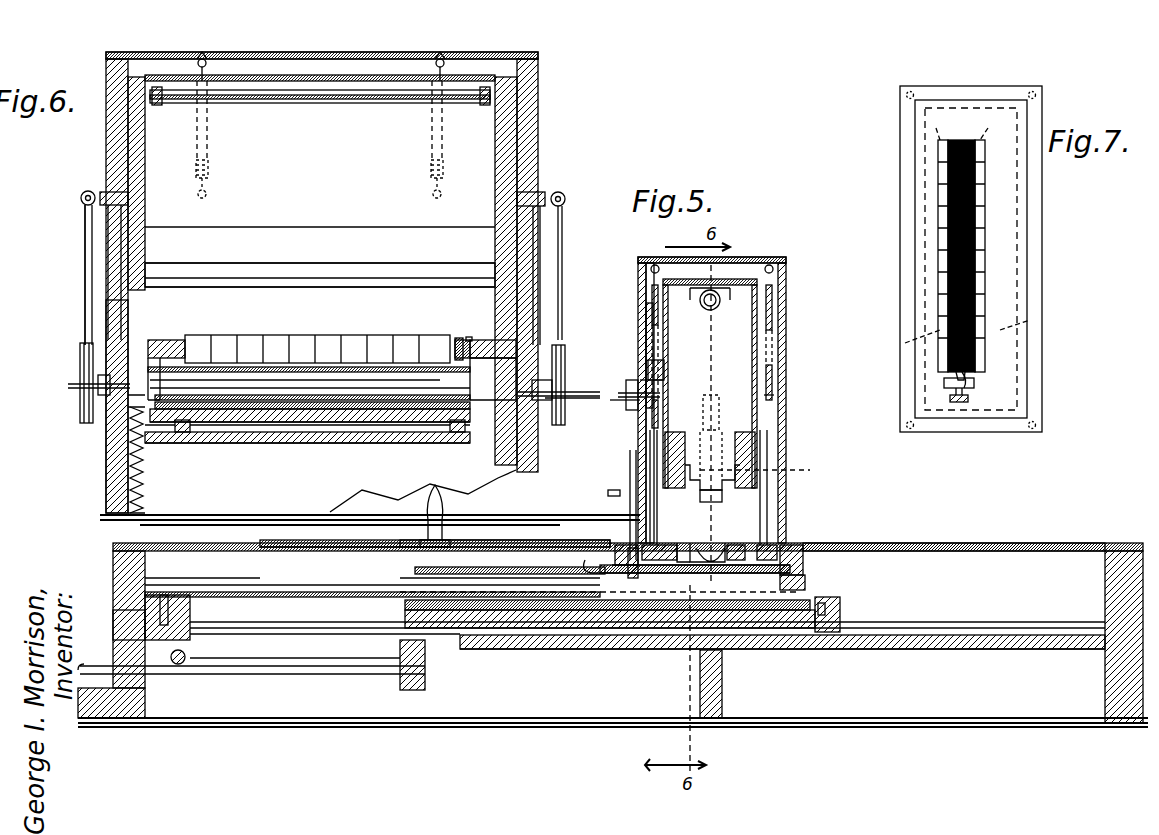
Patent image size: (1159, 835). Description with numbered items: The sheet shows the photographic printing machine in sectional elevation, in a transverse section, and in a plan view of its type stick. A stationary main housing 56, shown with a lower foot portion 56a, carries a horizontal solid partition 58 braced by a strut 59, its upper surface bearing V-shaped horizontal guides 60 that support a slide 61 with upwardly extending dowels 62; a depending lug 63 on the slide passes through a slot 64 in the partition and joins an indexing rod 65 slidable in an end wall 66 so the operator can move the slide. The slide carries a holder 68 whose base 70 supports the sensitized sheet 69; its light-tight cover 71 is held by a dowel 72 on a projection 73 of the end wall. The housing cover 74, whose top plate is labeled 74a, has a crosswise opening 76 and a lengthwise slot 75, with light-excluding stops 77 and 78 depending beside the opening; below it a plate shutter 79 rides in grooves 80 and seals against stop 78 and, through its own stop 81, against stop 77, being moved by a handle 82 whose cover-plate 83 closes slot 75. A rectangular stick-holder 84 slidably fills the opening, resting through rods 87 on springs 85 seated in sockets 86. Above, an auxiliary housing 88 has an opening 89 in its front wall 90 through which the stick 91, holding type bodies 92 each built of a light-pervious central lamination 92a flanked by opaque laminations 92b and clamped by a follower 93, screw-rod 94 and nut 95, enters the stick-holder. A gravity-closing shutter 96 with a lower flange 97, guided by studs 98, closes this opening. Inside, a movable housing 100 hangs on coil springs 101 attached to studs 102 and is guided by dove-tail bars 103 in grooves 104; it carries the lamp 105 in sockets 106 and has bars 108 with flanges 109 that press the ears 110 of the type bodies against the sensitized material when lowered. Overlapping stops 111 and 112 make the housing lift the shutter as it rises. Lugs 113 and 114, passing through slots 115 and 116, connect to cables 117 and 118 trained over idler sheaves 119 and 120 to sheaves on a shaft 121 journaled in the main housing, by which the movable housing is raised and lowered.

In FIG. 5, the main housing 56 is at (1135, 560).
In FIG. 5, the base casing foot 56a is at (88, 718).
In FIG. 6, the horizontal solid partition 58 is at (346, 443).
In FIG. 5, the horizontal solid partition 58 is at (966, 649).
In FIG. 5, the strut 59 is at (700, 682).
In FIG. 6, the horizontal guides 60 is at (180, 432).
In FIG. 5, the horizontal guides 60 is at (292, 628).
In FIG. 6, the slide 61 is at (308, 443).
In FIG. 5, the slide 61 is at (464, 636).
In FIG. 5, the dowels 62 is at (830, 610).
In FIG. 5, the depending lug 63 is at (425, 670).
In FIG. 5, the slot 64 is at (306, 640).
In FIG. 5, the indexing rod 65 is at (90, 666).
In FIG. 5, the end wall 66 is at (113, 590).
In FIG. 5, the holder 68 is at (835, 592).
In FIG. 6, the sheet 69 is at (235, 425).
In FIG. 5, the sheet 69 is at (520, 628).
In FIG. 6, the base 70 is at (388, 443).
In FIG. 5, the base 70 is at (840, 610).
In FIG. 6, the cover 71 is at (214, 395).
In FIG. 5, the cover 71 is at (330, 592).
In FIG. 5, the dowel 72 is at (113, 624).
In FIG. 5, the projection 73 is at (190, 612).
In FIG. 5, the cover 74 is at (248, 551).
In FIG. 5, the top cover plate 74a is at (960, 543).
In FIG. 5, the slot 75 is at (302, 547).
In FIG. 5, the opening 76 is at (620, 555).
In FIG. 5, the light-excluding stop 77 is at (614, 578).
In FIG. 6, the light-excluding stop 78 is at (262, 422).
In FIG. 5, the light-excluding stop 78 is at (790, 582).
In FIG. 6, the shutter 79 is at (380, 367).
In FIG. 5, the shutter 79 is at (512, 567).
In FIG. 5, the grooves 80 is at (198, 585).
In FIG. 5, the stop 81 is at (600, 548).
In FIG. 5, the handle 82 is at (442, 497).
In FIG. 5, the cover-plate 83 is at (298, 540).
In FIG. 6, the stick-holder 84 is at (150, 340).
In FIG. 5, the stick-holder 84 is at (765, 545).
In FIG. 7, the stick-holder 84 is at (900, 158).
In FIG. 6, the springs 85 is at (106, 450).
In FIG. 6, the sockets 86 is at (146, 480).
In FIG. 6, the rods 87 is at (80, 388).
In FIG. 5, the rods 87 is at (803, 545).
In FIG. 7, the rods 87 is at (910, 91).
In FIG. 6, the auxiliary housing 88 is at (553, 129).
In FIG. 5, the auxiliary housing 88 is at (795, 337).
In FIG. 5, the opening 89 is at (630, 503).
In FIG. 6, the front wall 90 is at (266, 52).
In FIG. 5, the front wall 90 is at (662, 257).
In FIG. 6, the stick 91 is at (148, 345).
In FIG. 5, the stick 91 is at (755, 545).
In FIG. 7, the stick 91 is at (925, 178).
In FIG. 6, the printing type bodies 92 is at (274, 335).
In FIG. 5, the printing type bodies 92 is at (736, 545).
In FIG. 7, the printing type bodies 92 is at (985, 212).
In FIG. 5, the central lamination 92a is at (712, 545).
In FIG. 7, the central lamination 92a is at (970, 375).
In FIG. 6, the opaque laminations 92b is at (295, 375).
In FIG. 5, the opaque laminations 92b is at (600, 579).
In FIG. 7, the opaque laminations 92b is at (971, 235).
In FIG. 6, the follower 93 is at (455, 340).
In FIG. 7, the follower 93 is at (970, 370).
In FIG. 6, the screw-rod 94 is at (458, 338).
In FIG. 7, the screw-rod 94 is at (944, 384).
In FIG. 6, the nut 95 is at (470, 338).
In FIG. 7, the nut 95 is at (968, 398).
In FIG. 5, the light-excluding shutter 96 is at (646, 312).
In FIG. 5, the flange 97 is at (612, 487).
In FIG. 6, the guide studs 98 is at (567, 393).
In FIG. 5, the guide studs 98 is at (618, 393).
In FIG. 6, the movable housing 100 is at (352, 75).
In FIG. 5, the movable housing 100 is at (742, 279).
In FIG. 6, the coil springs 101 is at (205, 165).
In FIG. 5, the coil springs 101 is at (652, 300).
In FIG. 6, the studs 102 is at (208, 196).
In FIG. 5, the studs 102 is at (652, 418).
In FIG. 6, the guide bars 103 is at (118, 133).
In FIG. 6, the dove-tail grooves 104 is at (158, 290).
In FIG. 5, the dove-tail grooves 104 is at (650, 480).
In FIG. 6, the electric lamp 105 is at (304, 103).
In FIG. 5, the electric lamp 105 is at (718, 290).
In FIG. 6, the lamp sockets 106 is at (162, 105).
In FIG. 5, the lamp sockets 106 is at (708, 312).
In FIG. 6, the bars 108 is at (315, 227).
In FIG. 5, the bars 108 is at (685, 437).
In FIG. 6, the flanges 109 is at (313, 263).
In FIG. 5, the flanges 109 is at (700, 470).
In FIG. 6, the ears 110 is at (324, 335).
In FIG. 5, the ears 110 is at (680, 545).
In FIG. 7, the ears 110 is at (938, 210).
In FIG. 5, the stop 111 is at (648, 376).
In FIG. 5, the stop 112 is at (664, 364).
In FIG. 6, the lug 113 is at (550, 192).
In FIG. 6, the lug 114 is at (97, 192).
In FIG. 5, the lug 114 is at (714, 398).
In FIG. 6, the slot 115 is at (541, 243).
In FIG. 6, the slot 116 is at (110, 246).
In FIG. 5, the slot 116 is at (786, 418).
In FIG. 6, the cable 117 is at (566, 202).
In FIG. 6, the cable 118 is at (85, 224).
In FIG. 6, the idler sheave 119 is at (566, 402).
In FIG. 5, the idler sheave 119 is at (632, 400).
In FIG. 6, the idler sheave 120 is at (80, 395).
In FIG. 5, the shaft 121 is at (178, 665).